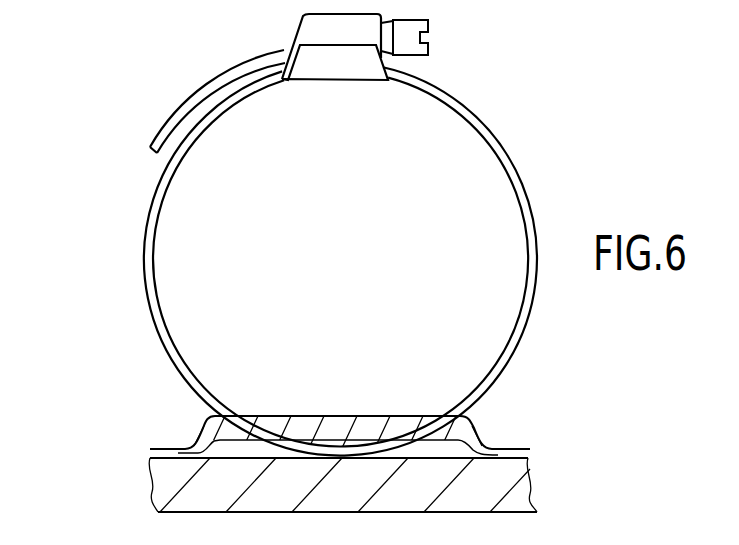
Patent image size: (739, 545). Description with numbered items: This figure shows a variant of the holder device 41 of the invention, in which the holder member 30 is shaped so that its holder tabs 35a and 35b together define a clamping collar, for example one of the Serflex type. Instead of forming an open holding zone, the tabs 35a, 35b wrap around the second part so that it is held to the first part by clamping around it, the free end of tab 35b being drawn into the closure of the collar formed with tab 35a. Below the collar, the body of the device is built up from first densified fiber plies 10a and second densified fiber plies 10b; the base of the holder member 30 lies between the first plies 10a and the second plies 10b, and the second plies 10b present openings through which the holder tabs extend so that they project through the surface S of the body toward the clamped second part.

The device 41 is at (82, 134).
The holder member 30 is at (492, 101).
The holder tab 35a is at (264, 87).
The holder tab 35b is at (167, 128).
The first densified fiber plies 10a is at (533, 494).
The second densified fiber plies 10b is at (532, 449).
The surface of the body S is at (168, 448).